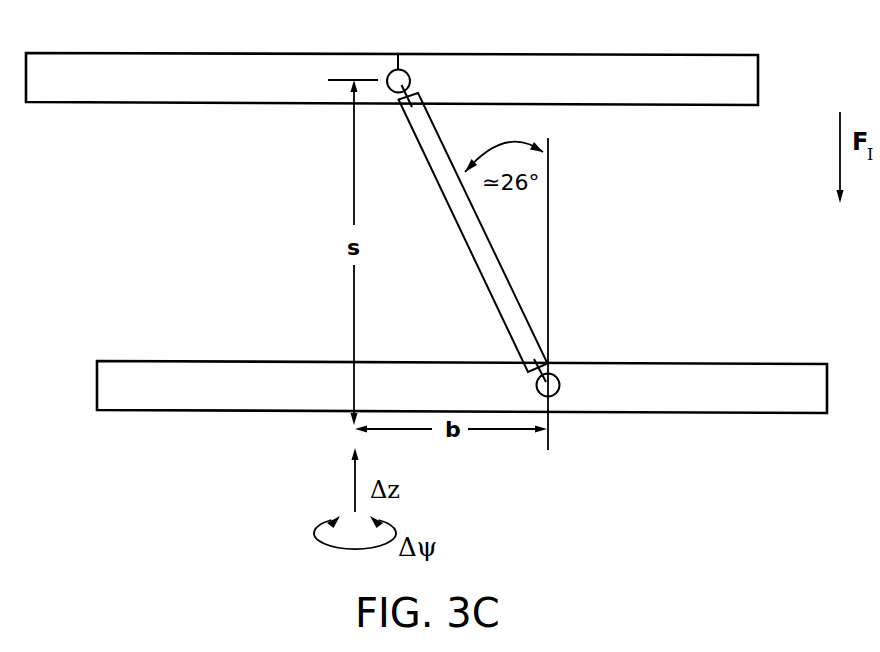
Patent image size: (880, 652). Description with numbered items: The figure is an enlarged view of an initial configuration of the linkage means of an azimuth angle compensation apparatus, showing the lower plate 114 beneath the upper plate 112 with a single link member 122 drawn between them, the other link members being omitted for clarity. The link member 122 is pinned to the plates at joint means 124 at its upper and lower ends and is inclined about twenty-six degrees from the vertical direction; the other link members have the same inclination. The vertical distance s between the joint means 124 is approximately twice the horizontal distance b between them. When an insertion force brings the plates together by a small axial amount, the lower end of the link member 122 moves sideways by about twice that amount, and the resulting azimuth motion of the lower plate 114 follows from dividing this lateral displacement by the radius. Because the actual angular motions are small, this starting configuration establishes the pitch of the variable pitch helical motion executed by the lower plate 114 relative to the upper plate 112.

The upper plate 112 is at (140, 67).
The lower plate 114 is at (172, 400).
The link member 122 is at (487, 274).
The joint means 124 is at (403, 77).